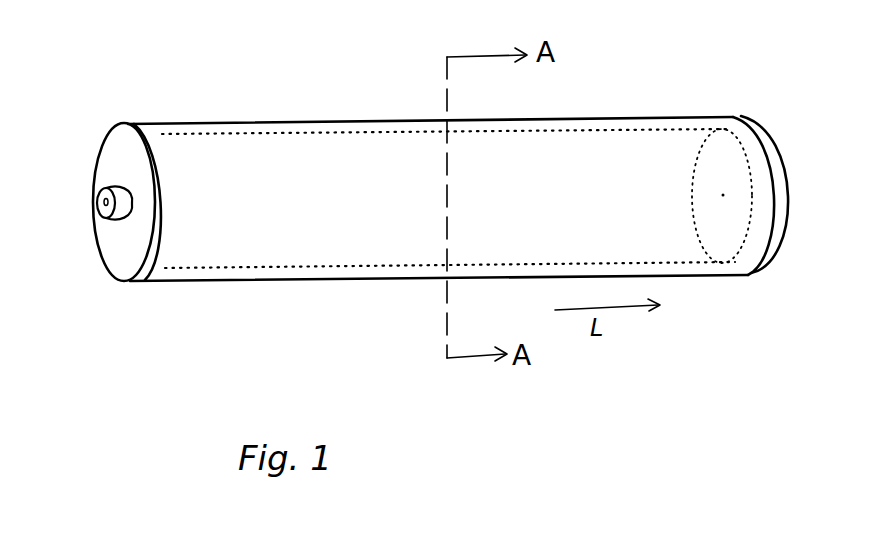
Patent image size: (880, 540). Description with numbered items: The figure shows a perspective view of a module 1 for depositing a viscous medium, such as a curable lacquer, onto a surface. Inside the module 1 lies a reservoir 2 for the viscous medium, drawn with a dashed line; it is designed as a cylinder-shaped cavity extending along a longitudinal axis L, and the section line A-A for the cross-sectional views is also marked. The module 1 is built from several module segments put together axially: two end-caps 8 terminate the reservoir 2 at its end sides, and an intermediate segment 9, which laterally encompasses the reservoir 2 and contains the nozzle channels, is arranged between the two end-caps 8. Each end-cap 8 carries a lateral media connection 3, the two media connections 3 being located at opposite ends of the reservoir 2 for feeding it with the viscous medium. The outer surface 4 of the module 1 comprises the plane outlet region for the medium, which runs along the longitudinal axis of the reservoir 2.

The module 1 is at (259, 66).
The reservoir 2 is at (332, 134).
The media connection 3 is at (100, 190).
The outer surface 4 is at (641, 117).
The end-cap 8 is at (117, 150).
The intermediate segment 9 is at (283, 281).